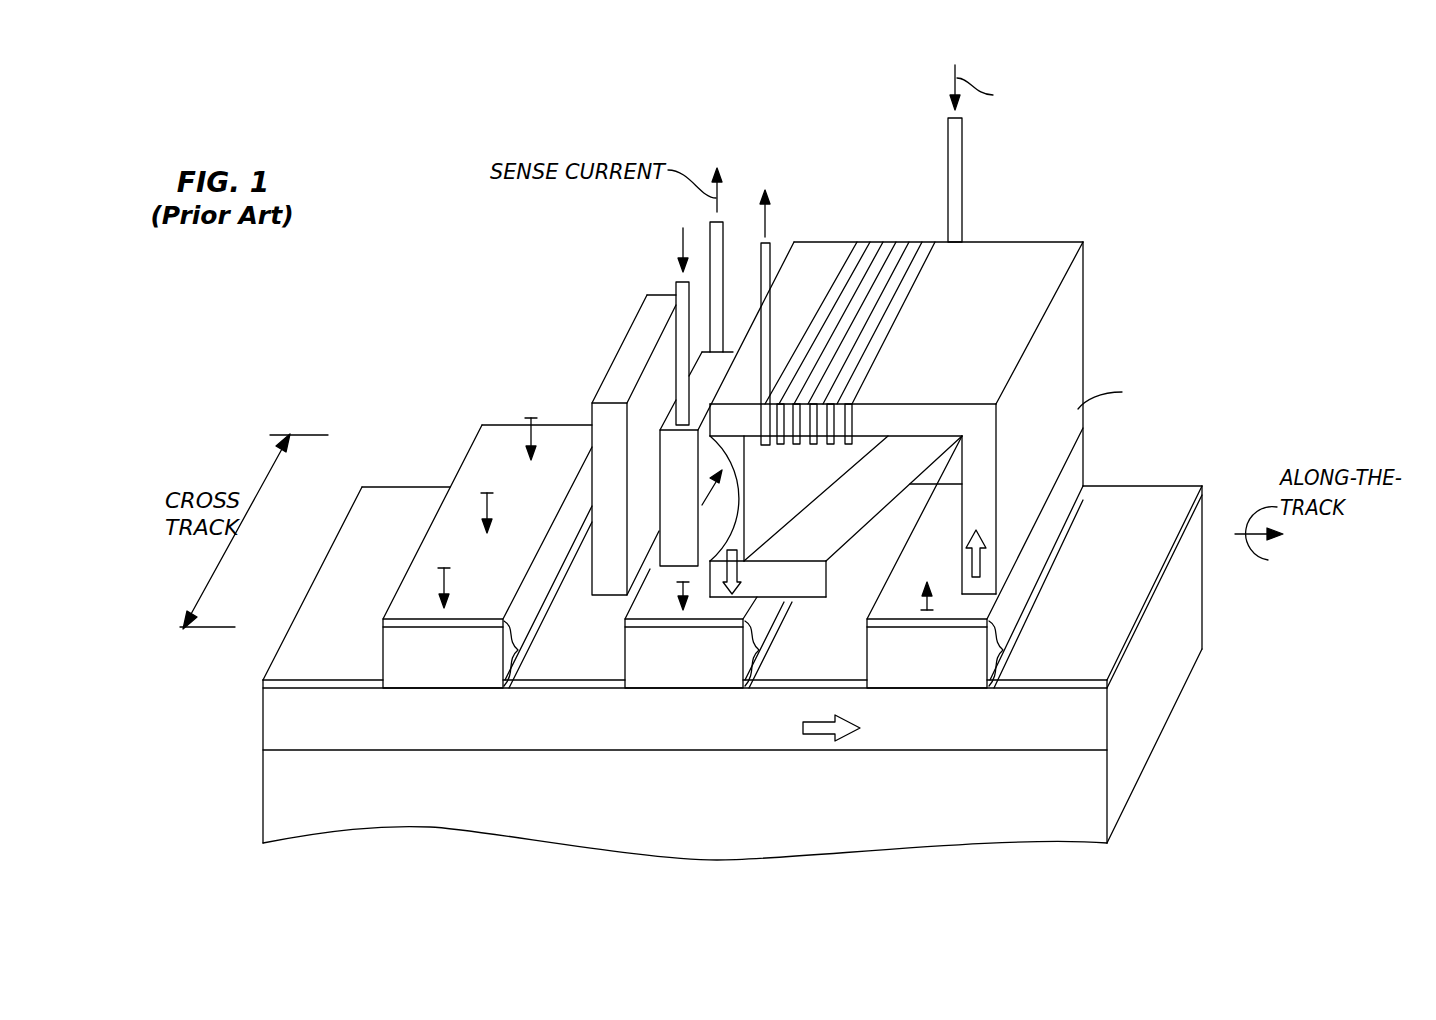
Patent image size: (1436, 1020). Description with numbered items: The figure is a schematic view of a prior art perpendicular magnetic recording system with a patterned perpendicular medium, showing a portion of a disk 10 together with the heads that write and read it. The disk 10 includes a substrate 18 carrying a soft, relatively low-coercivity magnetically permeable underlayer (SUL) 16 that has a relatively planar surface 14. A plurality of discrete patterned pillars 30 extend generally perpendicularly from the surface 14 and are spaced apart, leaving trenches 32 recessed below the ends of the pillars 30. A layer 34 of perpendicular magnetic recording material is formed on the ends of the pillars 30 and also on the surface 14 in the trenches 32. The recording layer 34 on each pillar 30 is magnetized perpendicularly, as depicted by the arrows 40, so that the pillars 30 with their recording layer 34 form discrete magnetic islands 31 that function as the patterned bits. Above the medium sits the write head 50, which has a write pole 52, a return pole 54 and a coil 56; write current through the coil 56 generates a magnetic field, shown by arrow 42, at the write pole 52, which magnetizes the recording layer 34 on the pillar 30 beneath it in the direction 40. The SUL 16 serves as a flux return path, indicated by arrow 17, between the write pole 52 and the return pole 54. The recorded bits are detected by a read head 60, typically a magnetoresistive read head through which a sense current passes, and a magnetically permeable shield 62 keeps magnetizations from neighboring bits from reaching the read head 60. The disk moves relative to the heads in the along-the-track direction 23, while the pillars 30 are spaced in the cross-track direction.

The disk 10 is at (752, 681).
The surface 14 is at (447, 690).
The soft underlayer (SUL) 16 is at (1085, 712).
The flux return path arrow 17 is at (823, 735).
The substrate 18 is at (1025, 825).
The along-the-track direction 23 is at (1273, 541).
The patterned pillars 30 is at (395, 656).
The magnetic islands 31 is at (772, 653).
The trenches 32 is at (387, 500).
The recording layer 34 is at (400, 621).
The magnetization arrows 40 is at (529, 430).
The magnetic field arrow 42 is at (984, 566).
The write head 50 is at (977, 331).
The write pole 52 is at (1066, 347).
The return pole 54 is at (864, 453).
The coil 56 is at (858, 244).
The read head 60 is at (671, 440).
The shield 62 is at (592, 423).